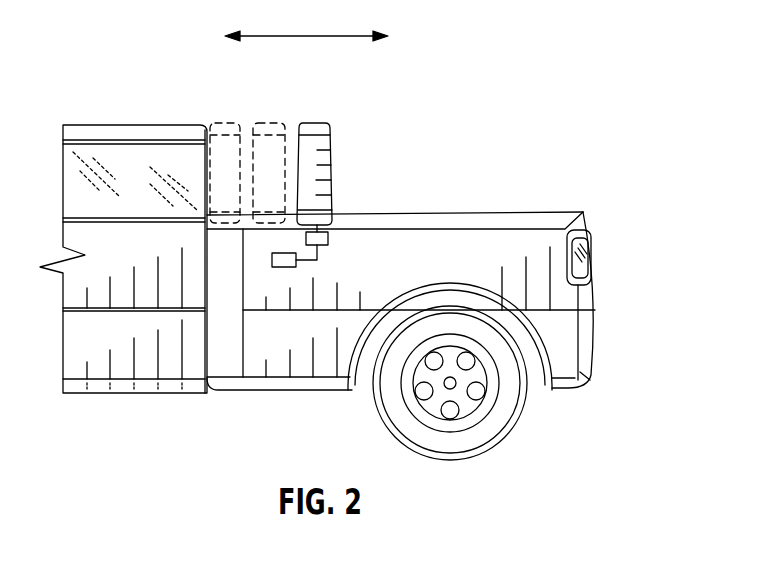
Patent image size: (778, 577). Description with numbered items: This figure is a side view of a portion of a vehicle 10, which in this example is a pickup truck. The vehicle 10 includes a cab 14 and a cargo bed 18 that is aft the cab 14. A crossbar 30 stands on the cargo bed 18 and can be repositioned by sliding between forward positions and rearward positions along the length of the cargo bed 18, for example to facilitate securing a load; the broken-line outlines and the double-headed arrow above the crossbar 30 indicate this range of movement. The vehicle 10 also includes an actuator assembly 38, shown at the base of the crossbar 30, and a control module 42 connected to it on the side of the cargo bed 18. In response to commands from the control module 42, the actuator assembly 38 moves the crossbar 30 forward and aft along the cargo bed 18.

The vehicle 10 is at (568, 72).
The cab 14 is at (112, 125).
The cargo bed 18 is at (525, 213).
The crossbar 30 is at (318, 125).
The actuator assembly 38 is at (329, 237).
The control module 42 is at (283, 268).